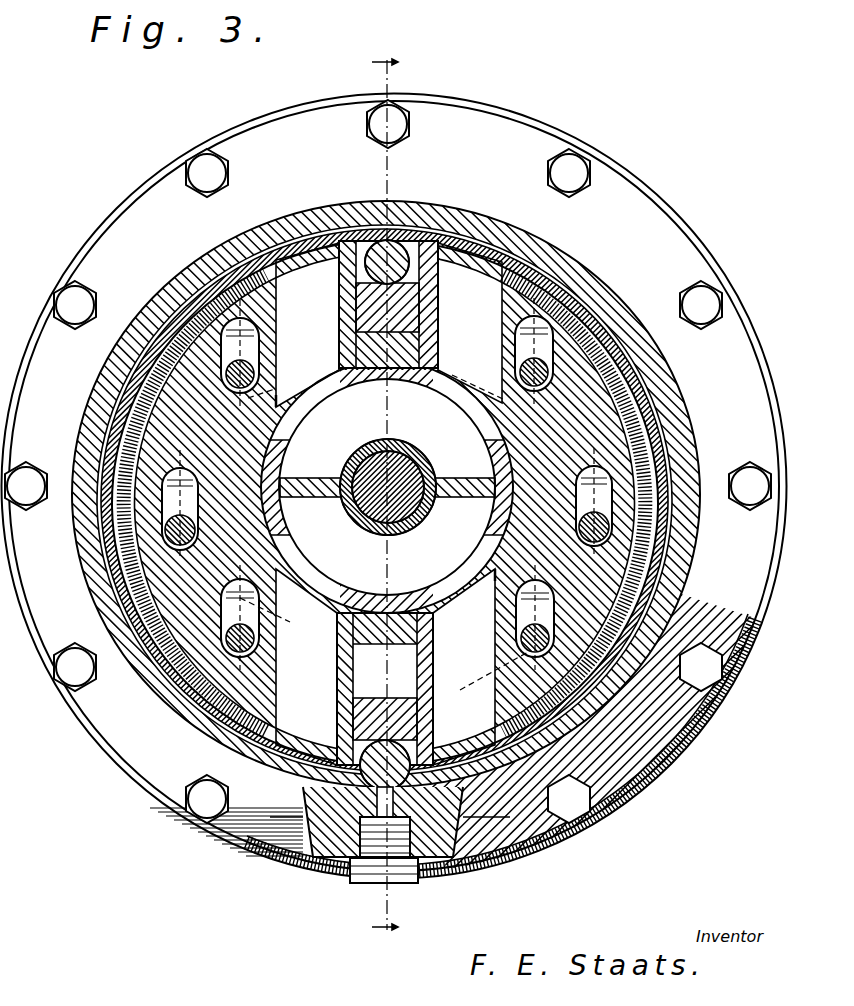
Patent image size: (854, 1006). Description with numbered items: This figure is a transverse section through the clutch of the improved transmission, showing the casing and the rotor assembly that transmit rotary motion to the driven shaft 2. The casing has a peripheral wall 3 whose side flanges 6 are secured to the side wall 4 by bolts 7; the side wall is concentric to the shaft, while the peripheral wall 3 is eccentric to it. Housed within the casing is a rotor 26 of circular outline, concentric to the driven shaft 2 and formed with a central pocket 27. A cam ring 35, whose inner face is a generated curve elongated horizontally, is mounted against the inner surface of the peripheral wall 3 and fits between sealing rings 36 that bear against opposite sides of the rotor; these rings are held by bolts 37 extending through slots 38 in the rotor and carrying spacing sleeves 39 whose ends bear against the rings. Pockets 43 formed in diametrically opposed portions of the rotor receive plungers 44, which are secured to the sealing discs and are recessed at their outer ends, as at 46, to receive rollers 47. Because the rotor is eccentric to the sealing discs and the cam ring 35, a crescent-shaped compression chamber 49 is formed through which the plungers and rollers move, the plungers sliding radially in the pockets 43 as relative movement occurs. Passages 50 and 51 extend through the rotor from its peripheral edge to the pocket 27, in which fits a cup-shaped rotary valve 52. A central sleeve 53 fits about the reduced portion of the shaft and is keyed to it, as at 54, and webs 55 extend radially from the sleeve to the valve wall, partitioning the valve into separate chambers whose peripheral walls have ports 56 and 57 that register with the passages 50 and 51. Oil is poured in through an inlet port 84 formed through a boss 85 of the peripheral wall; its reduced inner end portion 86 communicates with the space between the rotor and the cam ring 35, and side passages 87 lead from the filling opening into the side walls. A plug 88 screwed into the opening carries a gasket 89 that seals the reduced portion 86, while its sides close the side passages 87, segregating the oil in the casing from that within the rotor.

The driven shaft 2 is at (386, 458).
The peripheral wall 3 is at (567, 292).
The side wall 4 is at (553, 136).
The side flanges 6 is at (490, 138).
The bolts 7 is at (578, 168).
The rotor 26 is at (606, 410).
The central pocket 27 is at (492, 447).
The cam ring 35 is at (604, 327).
The sealing rings 36 is at (649, 392).
The bolts 37 is at (233, 657).
The slots 38 is at (165, 505).
The spacing sleeves 39 is at (294, 715).
The pockets 43 is at (420, 284).
The plungers 44 is at (375, 316).
The recess 46 is at (342, 286).
The rollers 47 is at (398, 248).
The compression chamber 49 is at (544, 714).
The passage 50 is at (312, 262).
The passage 51 is at (477, 270).
The rotary valve 52 is at (431, 621).
The central sleeve 53 is at (406, 445).
The key 54 is at (340, 480).
The webs 55 is at (306, 492).
The port 56 is at (333, 380).
The port 57 is at (472, 398).
The inlet port 84 is at (483, 876).
The boss 85 is at (318, 834).
The reduced inner end portion 86 is at (417, 768).
The side passages 87 is at (367, 867).
The plug 88 is at (410, 887).
The gasket 89 is at (352, 840).